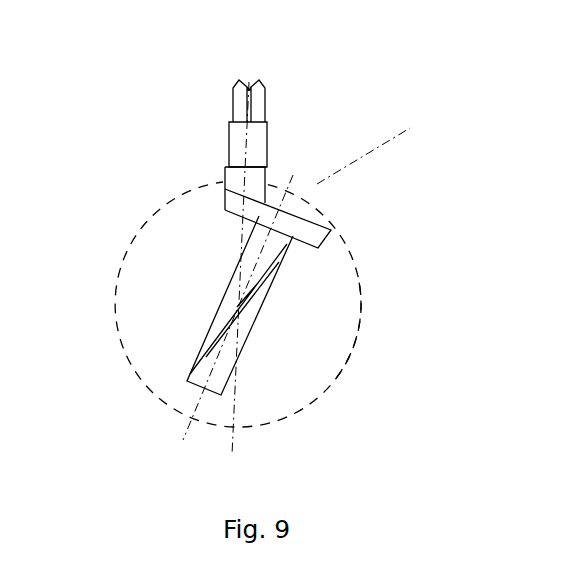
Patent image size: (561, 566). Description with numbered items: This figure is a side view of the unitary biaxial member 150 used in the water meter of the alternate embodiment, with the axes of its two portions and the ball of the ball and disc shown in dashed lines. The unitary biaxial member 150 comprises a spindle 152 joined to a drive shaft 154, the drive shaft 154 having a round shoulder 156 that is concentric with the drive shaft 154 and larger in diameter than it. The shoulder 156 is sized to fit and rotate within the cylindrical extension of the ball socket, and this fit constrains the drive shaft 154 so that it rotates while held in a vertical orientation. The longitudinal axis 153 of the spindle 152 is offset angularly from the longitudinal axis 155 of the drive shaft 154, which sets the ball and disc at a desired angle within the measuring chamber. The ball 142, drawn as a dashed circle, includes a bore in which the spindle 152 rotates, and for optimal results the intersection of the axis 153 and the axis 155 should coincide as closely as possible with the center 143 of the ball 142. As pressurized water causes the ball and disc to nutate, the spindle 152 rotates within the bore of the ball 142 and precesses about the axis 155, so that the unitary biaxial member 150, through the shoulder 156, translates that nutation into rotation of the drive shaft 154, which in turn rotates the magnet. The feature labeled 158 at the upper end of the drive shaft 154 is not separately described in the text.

The ball 142 is at (345, 368).
The center of the ball 143 is at (120, 225).
The unitary biaxial member 150 is at (410, 128).
The spindle 152 is at (222, 307).
The longitudinal axis of the spindle 153 is at (192, 420).
The drive shaft 154 is at (230, 138).
The longitudinal axis of the drive shaft 155 is at (253, 75).
The round shoulder 156 is at (222, 186).
The tool tip 158 is at (253, 82).